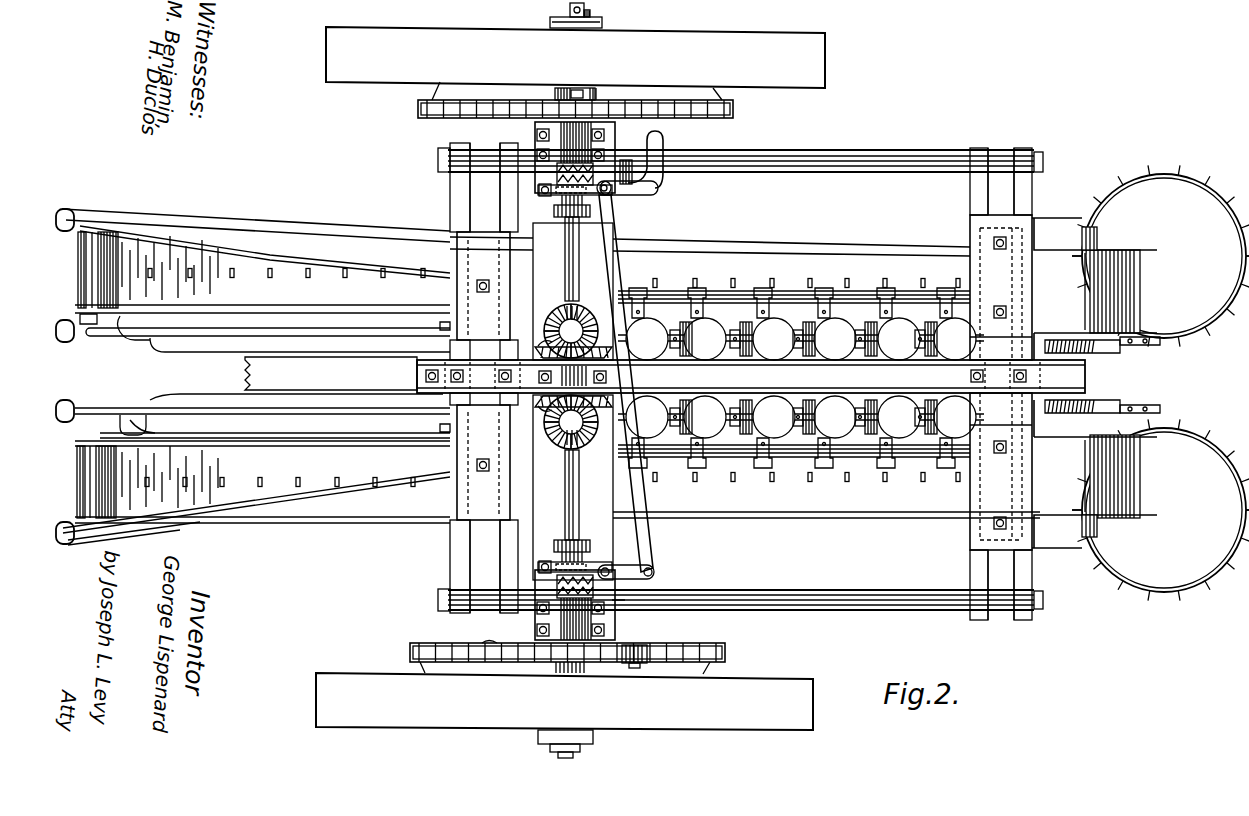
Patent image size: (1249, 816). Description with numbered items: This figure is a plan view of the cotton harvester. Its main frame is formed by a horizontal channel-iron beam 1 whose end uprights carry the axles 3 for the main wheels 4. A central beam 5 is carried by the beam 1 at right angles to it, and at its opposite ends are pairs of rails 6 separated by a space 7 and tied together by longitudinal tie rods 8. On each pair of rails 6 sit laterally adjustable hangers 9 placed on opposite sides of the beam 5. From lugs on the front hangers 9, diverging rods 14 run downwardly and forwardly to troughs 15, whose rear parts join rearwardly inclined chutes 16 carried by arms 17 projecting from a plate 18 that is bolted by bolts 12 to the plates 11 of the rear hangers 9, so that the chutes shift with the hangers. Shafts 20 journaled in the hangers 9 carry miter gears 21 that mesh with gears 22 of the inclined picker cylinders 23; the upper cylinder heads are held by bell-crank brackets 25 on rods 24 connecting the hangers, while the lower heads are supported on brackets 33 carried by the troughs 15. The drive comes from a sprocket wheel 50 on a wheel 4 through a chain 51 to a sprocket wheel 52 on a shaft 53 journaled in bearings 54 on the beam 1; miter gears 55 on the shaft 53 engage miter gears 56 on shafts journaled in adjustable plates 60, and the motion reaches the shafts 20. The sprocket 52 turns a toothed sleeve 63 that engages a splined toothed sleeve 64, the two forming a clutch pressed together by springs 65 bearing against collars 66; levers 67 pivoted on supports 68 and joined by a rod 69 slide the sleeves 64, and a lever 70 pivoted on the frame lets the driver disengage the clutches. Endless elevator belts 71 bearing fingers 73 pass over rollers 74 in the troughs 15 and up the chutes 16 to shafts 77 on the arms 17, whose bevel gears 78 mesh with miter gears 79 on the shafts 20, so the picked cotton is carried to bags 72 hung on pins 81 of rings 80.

The horizontal beam 1 is at (581, 378).
The axle 3 is at (574, 755).
The main wheel 4 is at (570, 378).
The beam 5 is at (751, 376).
The beam or rail 6 is at (847, 381).
The space 7 is at (742, 381).
The longitudinal tie bar or rod 8 is at (952, 168).
The hanger or support 9 is at (1040, 413).
The plate 11 is at (483, 412).
The bolt 12 is at (740, 410).
The rod 14 is at (128, 410).
The trough or plate 15 is at (251, 424).
The chute 16 is at (802, 377).
The arm or support 17 is at (1050, 232).
The plate 18 is at (1001, 382).
The shaft 20 is at (717, 362).
The miter gear 21 is at (690, 362).
The gear 22 is at (666, 362).
The picker stem or cylinder 23 is at (208, 348).
The rod 24 is at (794, 375).
The arm, bracket or support 25 is at (900, 458).
The bracket 33 is at (125, 340).
The sprocket wheel 50 is at (727, 651).
The chain 51 is at (672, 652).
The sprocket wheel 52 is at (487, 633).
The shaft 53 is at (573, 401).
The bearing 54 is at (606, 140).
The miter gear 55 is at (541, 375).
The miter gear 56 is at (573, 378).
The plate 60 is at (572, 375).
The toothed sleeve 63 is at (575, 381).
The toothed collar or sleeve 64 is at (545, 572).
The spring 65 is at (582, 556).
The collar 66 is at (570, 378).
The lever 67 is at (640, 200).
The support 68 is at (570, 382).
The rod or bar 69 is at (655, 548).
The lever 70 is at (651, 158).
The elevator 71 is at (431, 376).
The bag or receptacle 72 is at (1160, 382).
The projection or finger 73 is at (541, 373).
The roller or wheel 74 is at (127, 426).
The shaft 77 is at (1098, 232).
The bevel gear wheel 78 is at (1137, 375).
The miter gear 79 is at (1082, 377).
The ring 80 is at (1212, 473).
The pin 81 is at (1232, 420).